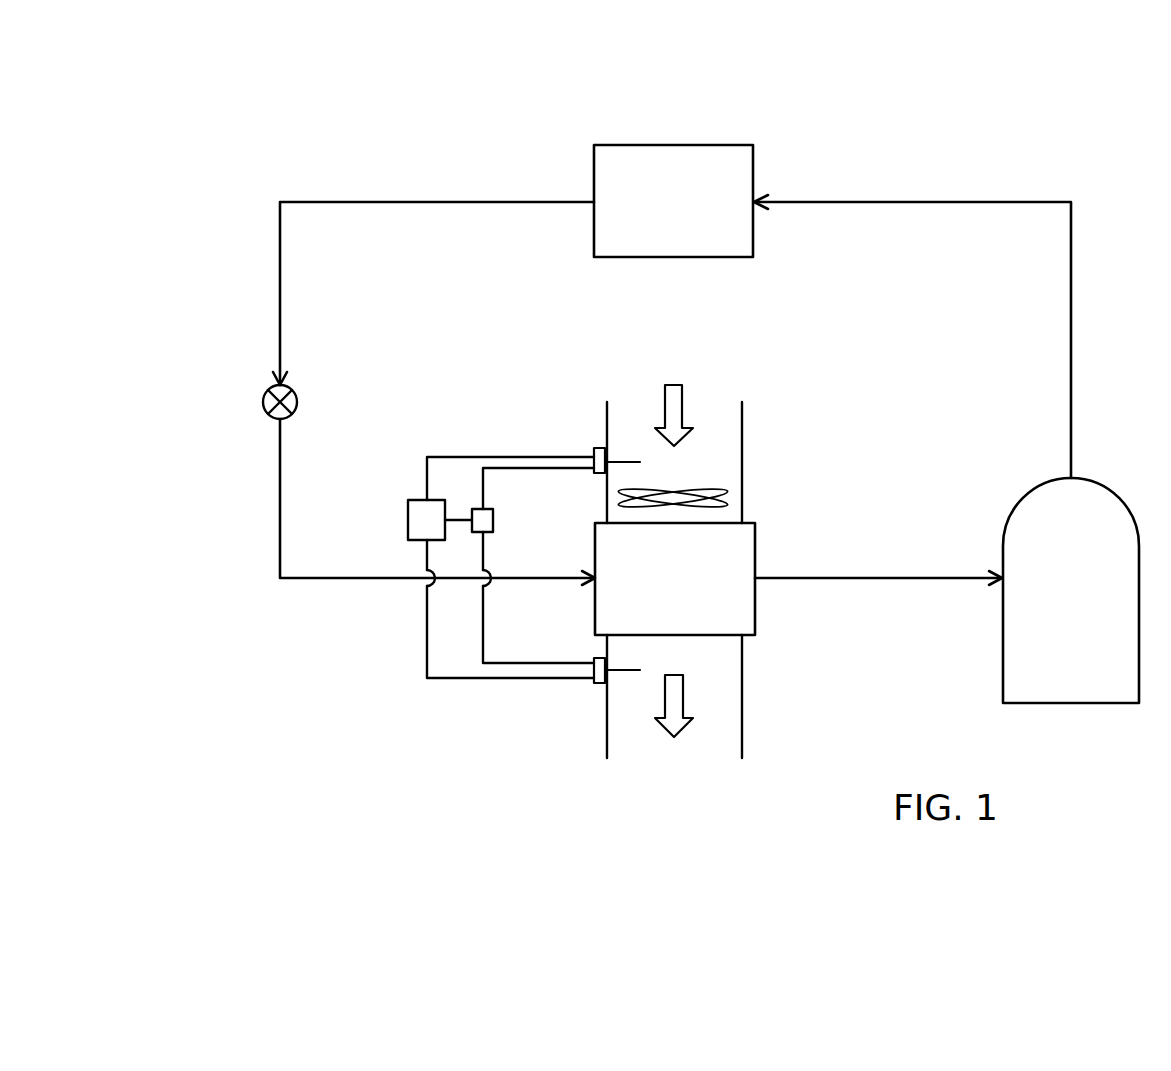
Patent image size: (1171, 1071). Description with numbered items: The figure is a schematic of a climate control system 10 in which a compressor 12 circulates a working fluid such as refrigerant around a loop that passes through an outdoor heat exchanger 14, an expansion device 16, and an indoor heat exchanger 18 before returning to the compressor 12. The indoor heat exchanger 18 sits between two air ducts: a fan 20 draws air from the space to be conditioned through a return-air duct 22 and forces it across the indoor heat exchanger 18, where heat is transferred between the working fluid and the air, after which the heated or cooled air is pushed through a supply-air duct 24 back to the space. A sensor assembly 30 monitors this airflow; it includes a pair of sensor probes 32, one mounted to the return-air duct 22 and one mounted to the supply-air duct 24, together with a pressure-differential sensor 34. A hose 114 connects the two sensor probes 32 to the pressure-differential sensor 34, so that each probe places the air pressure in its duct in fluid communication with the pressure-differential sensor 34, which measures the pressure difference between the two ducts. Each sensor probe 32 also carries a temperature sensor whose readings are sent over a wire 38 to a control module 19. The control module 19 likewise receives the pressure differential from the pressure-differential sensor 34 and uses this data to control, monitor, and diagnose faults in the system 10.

The system 10 is at (917, 152).
The compressor 12 is at (1025, 495).
The outdoor heat exchanger 14 is at (612, 145).
The expansion device 16 is at (263, 400).
The indoor heat exchanger 18 is at (753, 605).
The control module 19 is at (408, 512).
The fan 20 is at (712, 488).
The return-air duct 22 is at (742, 460).
The supply-air duct 24 is at (742, 688).
The sensor assembly 30 is at (580, 446).
The sensor probe 32 is at (598, 445).
The pressure-differential sensor 34 is at (493, 519).
The wire 38 is at (438, 457).
The hose 114 is at (526, 468).